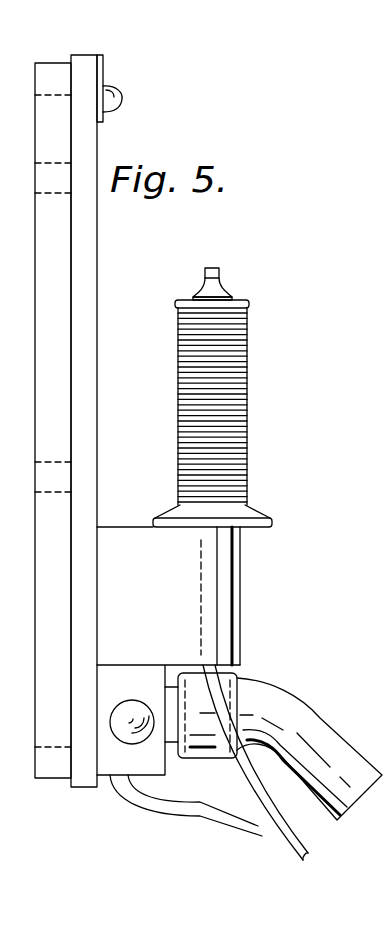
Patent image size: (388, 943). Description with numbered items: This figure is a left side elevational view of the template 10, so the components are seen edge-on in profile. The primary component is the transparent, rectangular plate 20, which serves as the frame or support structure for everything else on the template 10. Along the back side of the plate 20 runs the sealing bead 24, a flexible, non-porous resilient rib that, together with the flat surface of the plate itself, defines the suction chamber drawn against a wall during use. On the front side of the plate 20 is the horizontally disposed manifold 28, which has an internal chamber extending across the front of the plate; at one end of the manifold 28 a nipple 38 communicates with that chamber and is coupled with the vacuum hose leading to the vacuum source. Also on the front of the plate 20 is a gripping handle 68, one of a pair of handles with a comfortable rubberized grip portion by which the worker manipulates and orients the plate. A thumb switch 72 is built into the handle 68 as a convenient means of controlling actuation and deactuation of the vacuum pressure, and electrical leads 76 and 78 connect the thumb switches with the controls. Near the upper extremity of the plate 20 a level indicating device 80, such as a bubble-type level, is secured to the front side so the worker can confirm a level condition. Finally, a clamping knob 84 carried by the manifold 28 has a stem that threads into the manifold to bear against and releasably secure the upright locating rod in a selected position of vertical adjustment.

The template 10 is at (246, 244).
The plate 20 is at (83, 65).
The sealing bead 24 is at (53, 75).
The manifold 28 is at (168, 760).
The nipple 38 is at (297, 712).
The gripping handle 68 is at (250, 382).
The thumb switch 72 is at (212, 267).
The electrical lead 76 is at (253, 816).
The electrical lead 78 is at (186, 807).
The level indicating device 80 is at (115, 100).
The clamping knob 84 is at (136, 700).